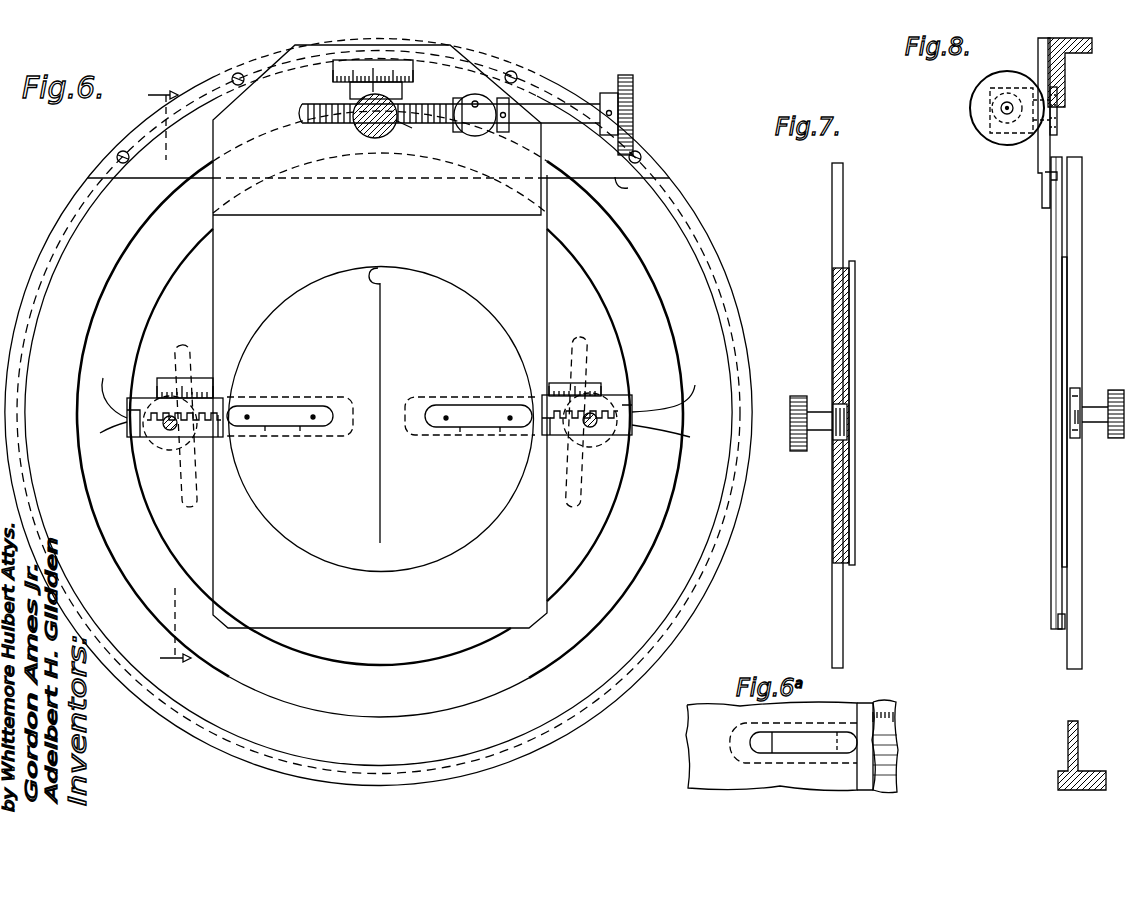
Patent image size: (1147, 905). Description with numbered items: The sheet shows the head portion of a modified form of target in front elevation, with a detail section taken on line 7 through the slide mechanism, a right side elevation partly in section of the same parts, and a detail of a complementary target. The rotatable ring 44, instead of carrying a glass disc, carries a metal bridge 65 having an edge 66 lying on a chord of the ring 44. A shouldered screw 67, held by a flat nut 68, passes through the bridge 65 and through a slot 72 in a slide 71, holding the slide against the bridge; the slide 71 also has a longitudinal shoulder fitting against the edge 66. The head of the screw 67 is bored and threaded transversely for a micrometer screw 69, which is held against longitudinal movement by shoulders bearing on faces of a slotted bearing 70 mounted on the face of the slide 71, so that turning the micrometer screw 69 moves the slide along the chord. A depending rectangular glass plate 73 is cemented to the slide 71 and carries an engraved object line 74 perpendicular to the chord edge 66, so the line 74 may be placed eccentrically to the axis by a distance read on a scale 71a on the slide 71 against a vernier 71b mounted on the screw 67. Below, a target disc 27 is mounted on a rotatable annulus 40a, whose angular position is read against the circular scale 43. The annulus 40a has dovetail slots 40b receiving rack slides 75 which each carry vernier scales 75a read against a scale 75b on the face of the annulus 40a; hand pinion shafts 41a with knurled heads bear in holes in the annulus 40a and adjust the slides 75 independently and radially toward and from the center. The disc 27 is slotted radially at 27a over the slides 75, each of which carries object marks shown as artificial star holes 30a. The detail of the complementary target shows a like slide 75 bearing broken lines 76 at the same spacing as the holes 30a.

In FIG. 6, the section line 7 is at (169, 375).
In FIG. 6, the target disc 27 is at (448, 276).
In FIG. 7, the target disc 27 is at (857, 553).
In FIG. 6, the radial slots 27a is at (278, 432).
In FIG. 6, the artificial star holes 30a is at (312, 414).
In FIG. 6, the annulus 40a is at (338, 645).
In FIG. 7, the annulus 40a is at (838, 205).
In FIG. 8, the annulus 40a is at (1078, 540).
In FIG. 6, the dovetail slots 40b is at (395, 398).
In FIG. 6, the hand pinion shafts 41a is at (165, 430).
In FIG. 7, the hand pinion shafts 41a is at (834, 423).
In FIG. 8, the hand pinion shafts 41a is at (1073, 420).
In FIG. 6, the scale 43 is at (604, 246).
In FIG. 6, the ring 44 is at (697, 237).
In FIG. 8, the ring 44 is at (1075, 44).
In FIG. 6, the metal bridge 65 is at (573, 136).
In FIG. 8, the metal bridge 65 is at (1047, 58).
In FIG. 6, the edge 66 is at (640, 178).
In FIG. 8, the edge 66 is at (1055, 177).
In FIG. 6, the shouldered screw 67 is at (362, 135).
In FIG. 8, the shouldered screw 67 is at (1000, 133).
In FIG. 8, the flat nut 68 is at (1057, 140).
In FIG. 6, the micrometer screw 69 is at (540, 115).
In FIG. 8, the micrometer screw 69 is at (976, 114).
In FIG. 6, the slotted bearing 70 is at (477, 131).
In FIG. 6, the slide 71 is at (297, 207).
In FIG. 8, the slide 71 is at (1043, 168).
In FIG. 6, the scale 71a is at (414, 58).
In FIG. 6, the vernier 71b is at (350, 90).
In FIG. 6, the slot 72 is at (412, 127).
In FIG. 8, the slot 72 is at (1053, 197).
In FIG. 6, the glass plate 73 is at (393, 612).
In FIG. 8, the glass plate 73 is at (1060, 330).
In FIG. 6, the object line 74 is at (389, 279).
In FIG. 6, the rack slides 75 is at (313, 397).
In FIG. 6A, the rack slides 75 is at (760, 750).
In FIG. 8, the rack slides 75 is at (1072, 406).
In FIG. 6, the vernier scales 75a is at (222, 398).
In FIG. 6, the scale 75b is at (160, 393).
In FIG. 6A, the broken lines 76 is at (840, 747).